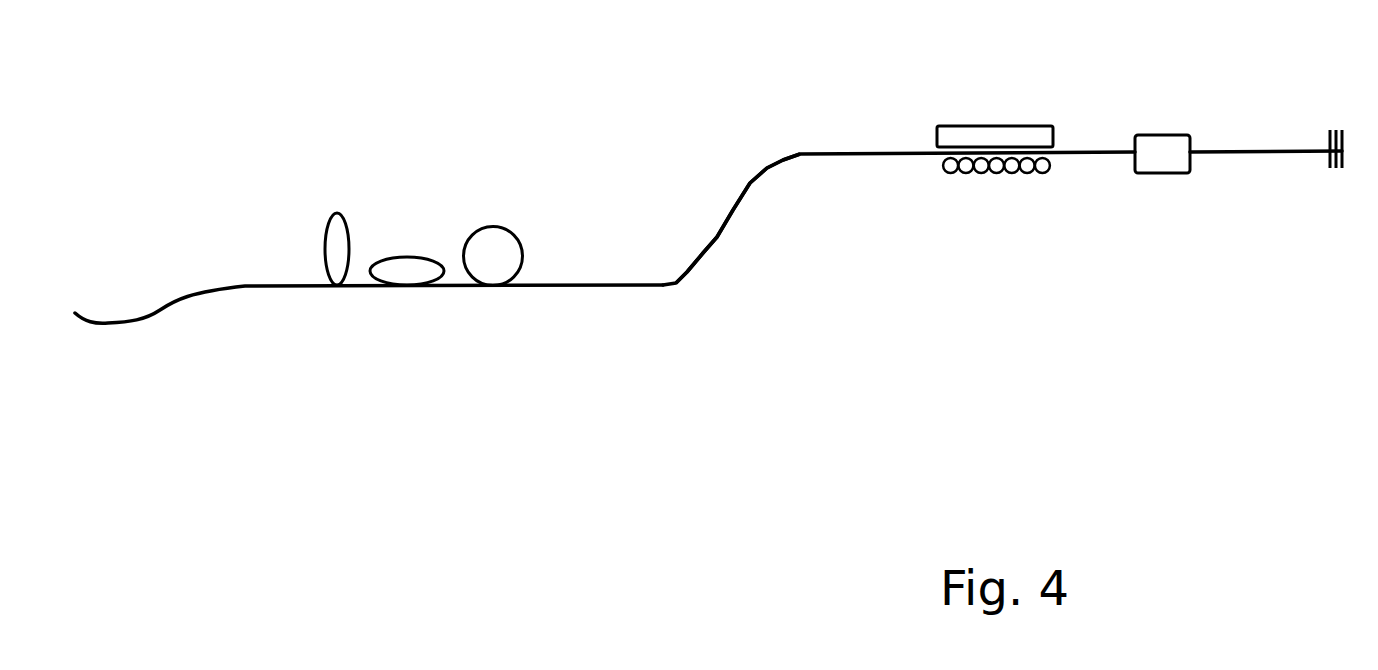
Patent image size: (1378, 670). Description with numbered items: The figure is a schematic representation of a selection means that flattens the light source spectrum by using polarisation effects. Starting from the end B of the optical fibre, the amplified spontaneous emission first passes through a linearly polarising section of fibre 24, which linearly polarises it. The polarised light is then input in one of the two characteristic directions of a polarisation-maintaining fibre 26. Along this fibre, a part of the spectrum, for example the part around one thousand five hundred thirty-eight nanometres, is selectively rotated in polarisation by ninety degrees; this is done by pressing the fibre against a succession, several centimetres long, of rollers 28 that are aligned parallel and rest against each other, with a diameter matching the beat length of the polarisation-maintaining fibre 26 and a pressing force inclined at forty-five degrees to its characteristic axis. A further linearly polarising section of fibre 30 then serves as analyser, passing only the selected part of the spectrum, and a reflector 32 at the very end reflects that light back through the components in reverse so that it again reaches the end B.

The end of the optical fiber B is at (708, 262).
The linearly polarising section of fibre 24 is at (491, 303).
The polarisation-maintaining fibre 26 is at (752, 188).
The rollers 28 is at (1005, 196).
The further linearly polarising section of fibre 30 is at (1203, 191).
The reflector 32 is at (1336, 127).